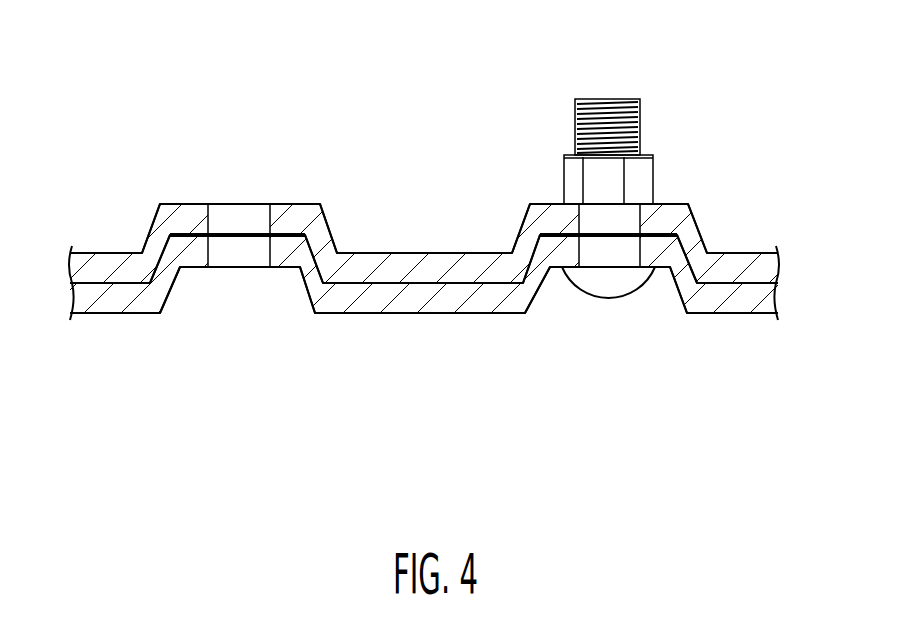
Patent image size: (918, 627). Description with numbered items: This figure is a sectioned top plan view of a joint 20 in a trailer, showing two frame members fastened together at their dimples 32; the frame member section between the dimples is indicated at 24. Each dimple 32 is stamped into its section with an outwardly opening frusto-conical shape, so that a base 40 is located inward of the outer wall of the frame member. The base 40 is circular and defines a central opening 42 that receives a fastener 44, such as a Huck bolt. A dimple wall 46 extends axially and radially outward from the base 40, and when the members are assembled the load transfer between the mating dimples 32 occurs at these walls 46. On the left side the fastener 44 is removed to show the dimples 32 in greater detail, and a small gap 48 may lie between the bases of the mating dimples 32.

The panel assembly 20 is at (723, 240).
The channel 24 is at (326, 338).
The dimple 32 is at (192, 218).
The base 40 is at (291, 225).
The central opening 42 is at (208, 237).
The fastener 44 is at (607, 330).
The dimple wall 46 is at (157, 240).
The gap 48 is at (278, 245).